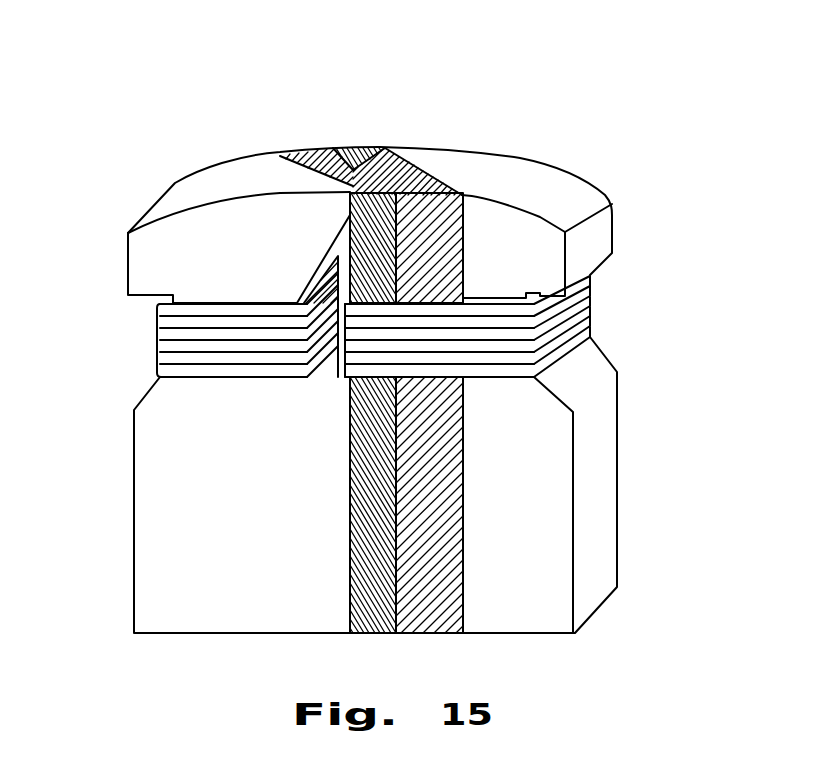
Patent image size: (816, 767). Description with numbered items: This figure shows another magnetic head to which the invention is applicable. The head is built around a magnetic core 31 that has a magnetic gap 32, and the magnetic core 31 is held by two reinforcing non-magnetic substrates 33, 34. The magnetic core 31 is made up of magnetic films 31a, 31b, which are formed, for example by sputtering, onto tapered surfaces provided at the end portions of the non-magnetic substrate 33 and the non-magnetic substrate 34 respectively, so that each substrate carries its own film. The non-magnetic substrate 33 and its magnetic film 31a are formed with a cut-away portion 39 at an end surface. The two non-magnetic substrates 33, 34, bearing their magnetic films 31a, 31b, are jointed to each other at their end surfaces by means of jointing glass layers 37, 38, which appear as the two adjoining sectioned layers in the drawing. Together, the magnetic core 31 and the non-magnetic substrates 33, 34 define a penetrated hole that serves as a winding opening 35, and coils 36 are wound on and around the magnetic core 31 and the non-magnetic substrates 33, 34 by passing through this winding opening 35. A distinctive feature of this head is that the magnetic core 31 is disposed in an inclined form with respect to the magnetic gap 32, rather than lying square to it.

The magnetic core 31 is at (445, 238).
The magnetic film 31a is at (310, 148).
The magnetic film 31b is at (415, 187).
The magnetic gap 32 is at (367, 147).
The non-magnetic substrate 33 is at (178, 199).
The non-magnetic substrate 34 is at (495, 167).
The winding opening 35 is at (327, 360).
The coils 36 is at (157, 338).
The jointing glass layer 37 is at (378, 147).
The jointing glass layer 38 is at (383, 543).
The cut-away portion 39 is at (322, 248).